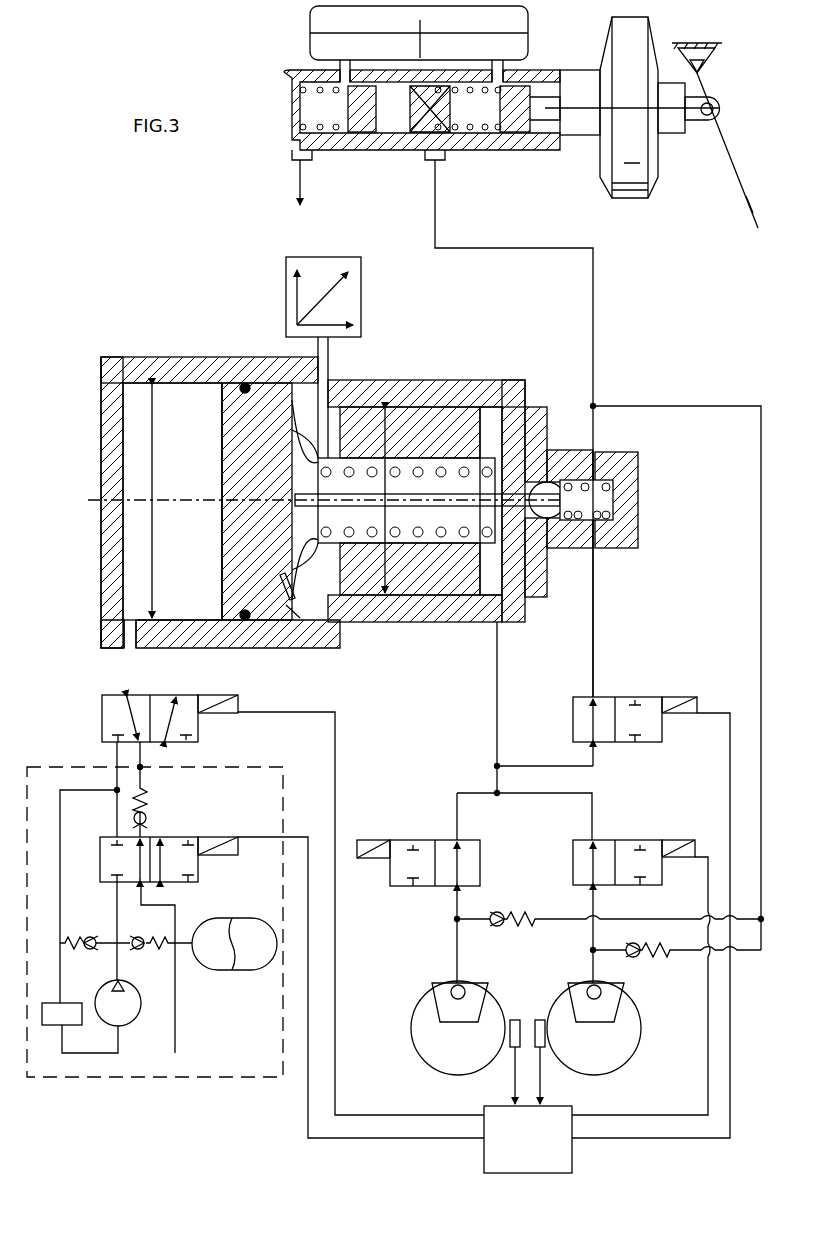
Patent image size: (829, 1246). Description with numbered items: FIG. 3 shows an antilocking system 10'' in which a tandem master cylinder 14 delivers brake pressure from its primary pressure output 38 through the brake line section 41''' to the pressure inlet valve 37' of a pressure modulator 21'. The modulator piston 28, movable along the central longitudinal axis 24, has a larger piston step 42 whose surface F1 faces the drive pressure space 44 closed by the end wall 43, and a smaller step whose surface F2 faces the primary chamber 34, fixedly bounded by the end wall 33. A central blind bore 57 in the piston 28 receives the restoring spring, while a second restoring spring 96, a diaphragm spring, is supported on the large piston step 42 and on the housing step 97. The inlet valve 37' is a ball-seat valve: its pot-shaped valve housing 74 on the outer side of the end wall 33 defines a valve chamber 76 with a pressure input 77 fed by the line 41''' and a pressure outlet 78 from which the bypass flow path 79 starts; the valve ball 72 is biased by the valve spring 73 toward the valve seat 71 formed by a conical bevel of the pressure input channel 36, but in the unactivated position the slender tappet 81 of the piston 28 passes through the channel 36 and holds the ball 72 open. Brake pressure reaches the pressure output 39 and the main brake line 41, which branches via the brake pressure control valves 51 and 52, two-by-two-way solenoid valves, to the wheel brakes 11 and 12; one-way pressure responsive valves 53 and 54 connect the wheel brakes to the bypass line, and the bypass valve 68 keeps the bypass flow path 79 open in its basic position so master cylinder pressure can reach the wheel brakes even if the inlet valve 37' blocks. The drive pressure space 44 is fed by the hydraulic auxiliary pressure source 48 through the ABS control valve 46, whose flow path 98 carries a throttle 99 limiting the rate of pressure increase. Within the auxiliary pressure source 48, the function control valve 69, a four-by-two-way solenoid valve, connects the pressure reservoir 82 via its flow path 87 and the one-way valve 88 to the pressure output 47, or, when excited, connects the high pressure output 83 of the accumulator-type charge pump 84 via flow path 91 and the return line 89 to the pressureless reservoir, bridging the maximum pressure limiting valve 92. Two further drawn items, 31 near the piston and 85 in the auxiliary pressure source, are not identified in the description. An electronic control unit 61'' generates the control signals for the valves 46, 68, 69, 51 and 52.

The antilocking system 10'' is at (214, 54).
The tandem master cylinder 14 is at (512, 152).
The primary pressure output 38 is at (435, 165).
The brake line section 41''' is at (515, 428).
The tappet 81 is at (372, 470).
The pressure modulator 21' is at (313, 480).
The end wall 43 is at (101, 432).
The drive pressure space 44 is at (135, 553).
The central longitudinal axis 24 is at (93, 513).
The surface F1 is at (152, 490).
The larger piston step 42 is at (230, 462).
The modulator piston 28 is at (220, 527).
The seal 31 is at (247, 622).
The second restoring spring 96 is at (284, 579).
The housing step 97 is at (300, 612).
The flow path 98 is at (132, 700).
The primary chamber 34 is at (485, 415).
The end wall 33 is at (507, 415).
The surface F2 is at (385, 503).
The central blind bore 57 is at (425, 545).
The valve ball 72 is at (548, 485).
The pressure input channel 36 is at (545, 565).
The valve housing 74 is at (568, 540).
The valve seat 71 is at (527, 420).
The pressure inlet valve 37' is at (624, 485).
The pressure input 77 is at (596, 458).
The valve chamber 76 is at (610, 492).
The valve spring 73 is at (615, 520).
The pressure outlet 78 is at (594, 555).
The pressure output 39 is at (495, 628).
The bypass flow path 79 is at (595, 655).
The main brake line 41 is at (603, 677).
The ABS control valve 46 is at (103, 700).
The throttle 99 is at (115, 717).
The pressure output 47 is at (142, 768).
The one-way valve 88 is at (147, 816).
The return line 89 is at (60, 865).
The hydraulic auxiliary pressure source 48 is at (220, 1072).
The flow path 87 is at (135, 850).
The function control valve 69 is at (200, 862).
The flow path 91 is at (170, 877).
The maximum pressure limiting valve 92 is at (76, 932).
The reservoir 85 is at (60, 1003).
The accumulator-type charge pump 84 is at (122, 1020).
The high pressure output 83 is at (120, 978).
The pressure reservoir 82 is at (245, 960).
The bypass valve 68 is at (652, 735).
The brake pressure control valve 51 is at (392, 888).
The brake pressure control valve 52 is at (668, 880).
The one-way pressure responsive valve 53 is at (518, 910).
The one-way pressure responsive valve 54 is at (660, 958).
The wheel brake 11 is at (432, 1055).
The wheel brake 12 is at (630, 1056).
The electronic control unit 61'' is at (504, 1096).